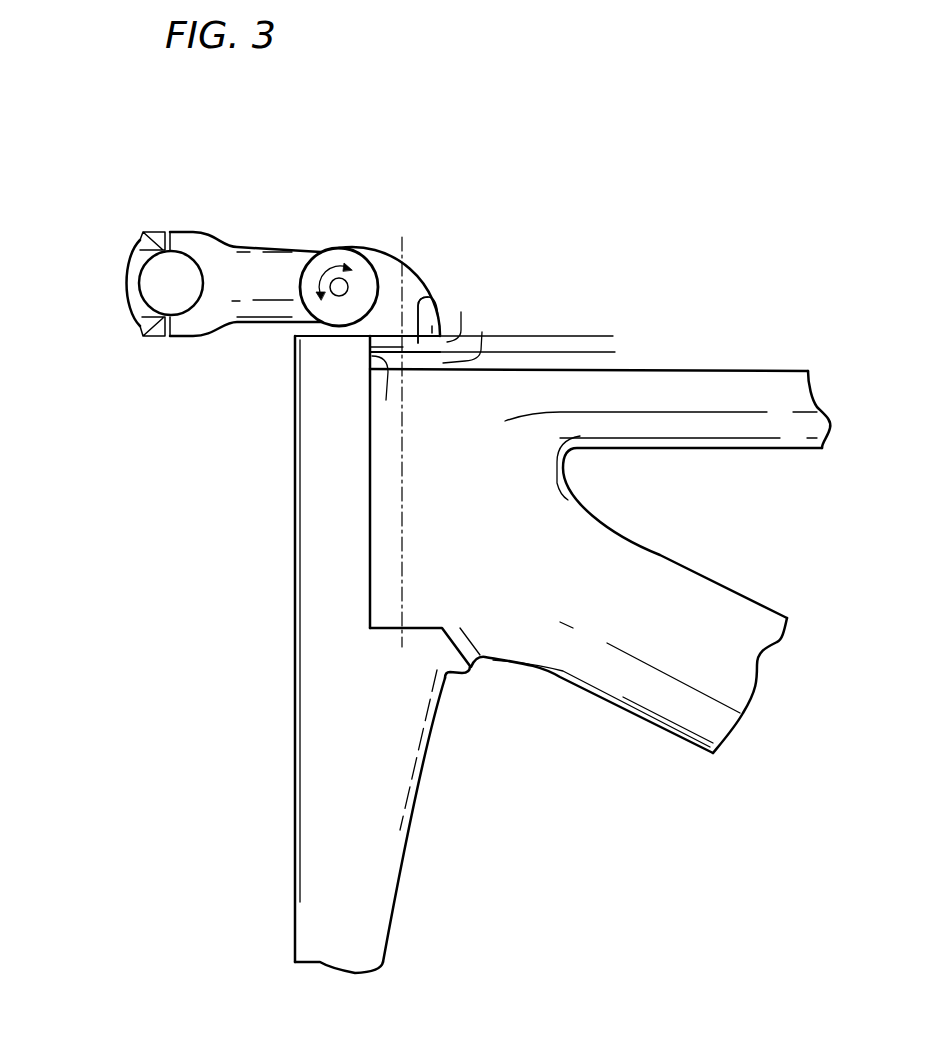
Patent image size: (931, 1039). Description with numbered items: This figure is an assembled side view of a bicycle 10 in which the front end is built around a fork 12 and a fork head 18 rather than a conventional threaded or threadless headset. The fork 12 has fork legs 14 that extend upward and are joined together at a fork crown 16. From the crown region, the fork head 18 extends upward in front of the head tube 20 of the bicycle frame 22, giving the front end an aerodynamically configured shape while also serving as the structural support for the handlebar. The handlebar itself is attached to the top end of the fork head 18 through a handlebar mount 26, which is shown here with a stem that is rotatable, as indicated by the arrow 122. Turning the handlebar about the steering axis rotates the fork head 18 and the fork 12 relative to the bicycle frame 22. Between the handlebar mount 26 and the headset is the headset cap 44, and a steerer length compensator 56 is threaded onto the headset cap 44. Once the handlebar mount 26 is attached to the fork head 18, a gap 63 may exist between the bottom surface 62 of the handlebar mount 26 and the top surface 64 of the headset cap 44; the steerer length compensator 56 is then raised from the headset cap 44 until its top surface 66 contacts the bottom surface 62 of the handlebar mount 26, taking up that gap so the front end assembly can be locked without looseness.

The bicycle 10 is at (137, 125).
The fork 12 is at (112, 965).
The fork legs 14 is at (320, 924).
The fork crown 16 is at (257, 585).
The fork head 18 is at (318, 463).
The head tube 20 is at (420, 417).
The bicycle frame 22 is at (843, 228).
The handlebar mount 26 is at (137, 188).
The headset cap 44 is at (482, 332).
The steerer length compensator 56 is at (461, 312).
The bottom surface 62 is at (462, 283).
The gap 63 is at (590, 354).
The top surface 64 is at (368, 396).
The top surface 66 is at (422, 298).
The arrow 122 is at (330, 268).